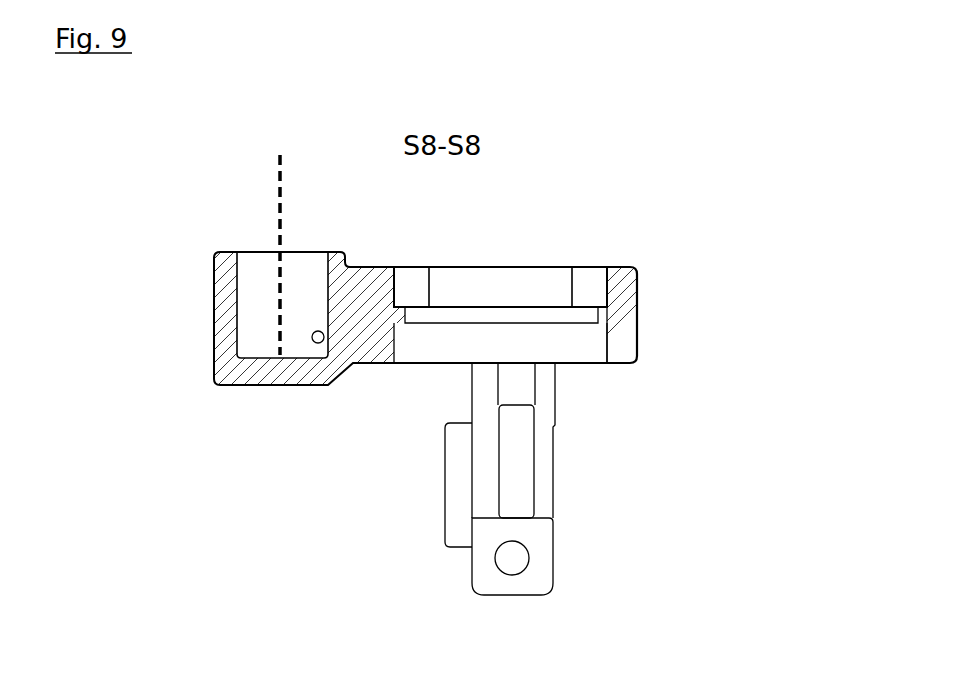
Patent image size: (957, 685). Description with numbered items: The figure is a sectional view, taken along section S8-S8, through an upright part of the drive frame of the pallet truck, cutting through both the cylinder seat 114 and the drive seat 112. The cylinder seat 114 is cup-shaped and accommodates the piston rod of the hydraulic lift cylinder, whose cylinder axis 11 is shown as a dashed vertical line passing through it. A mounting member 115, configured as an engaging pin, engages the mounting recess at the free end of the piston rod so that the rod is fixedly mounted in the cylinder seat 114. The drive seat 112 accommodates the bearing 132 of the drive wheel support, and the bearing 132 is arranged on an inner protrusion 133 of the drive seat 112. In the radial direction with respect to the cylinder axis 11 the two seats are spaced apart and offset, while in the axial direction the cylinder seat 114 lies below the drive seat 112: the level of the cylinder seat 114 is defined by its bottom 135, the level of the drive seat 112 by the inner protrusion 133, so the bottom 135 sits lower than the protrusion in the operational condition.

The cylinder axis 11 is at (280, 208).
The drive seat 112 is at (554, 356).
The cylinder seat 114 is at (200, 308).
The mounting member 115 is at (318, 345).
The bearing 132 is at (418, 285).
The inner protrusion 133 is at (512, 308).
The bottom 135 is at (253, 363).